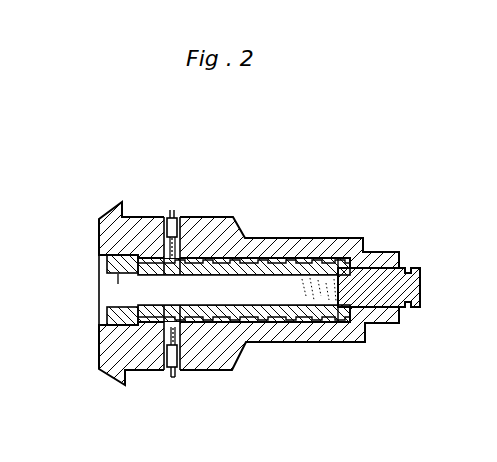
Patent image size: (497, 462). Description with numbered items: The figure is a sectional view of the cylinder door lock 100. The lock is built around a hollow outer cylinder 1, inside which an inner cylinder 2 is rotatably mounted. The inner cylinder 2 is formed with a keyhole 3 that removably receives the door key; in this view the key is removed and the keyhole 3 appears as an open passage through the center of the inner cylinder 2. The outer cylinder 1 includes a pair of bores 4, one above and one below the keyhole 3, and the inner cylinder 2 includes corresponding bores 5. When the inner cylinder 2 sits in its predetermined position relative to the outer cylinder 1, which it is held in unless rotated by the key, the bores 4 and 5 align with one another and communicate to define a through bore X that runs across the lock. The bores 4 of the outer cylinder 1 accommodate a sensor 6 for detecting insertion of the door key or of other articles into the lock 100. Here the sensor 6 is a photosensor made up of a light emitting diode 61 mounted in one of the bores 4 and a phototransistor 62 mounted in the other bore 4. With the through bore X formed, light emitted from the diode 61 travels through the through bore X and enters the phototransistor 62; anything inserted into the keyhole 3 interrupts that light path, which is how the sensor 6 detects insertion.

The outer cylinder 1 is at (245, 232).
The inner cylinder 2 is at (297, 272).
The keyhole 3 is at (302, 293).
The bores 4 is at (235, 230).
The bores 5 is at (160, 276).
The sensor 6 is at (148, 291).
The light emitting diode 61 is at (167, 222).
The phototransistor 62 is at (165, 358).
The cylinder door lock 100 is at (377, 236).
The through bore X is at (182, 370).